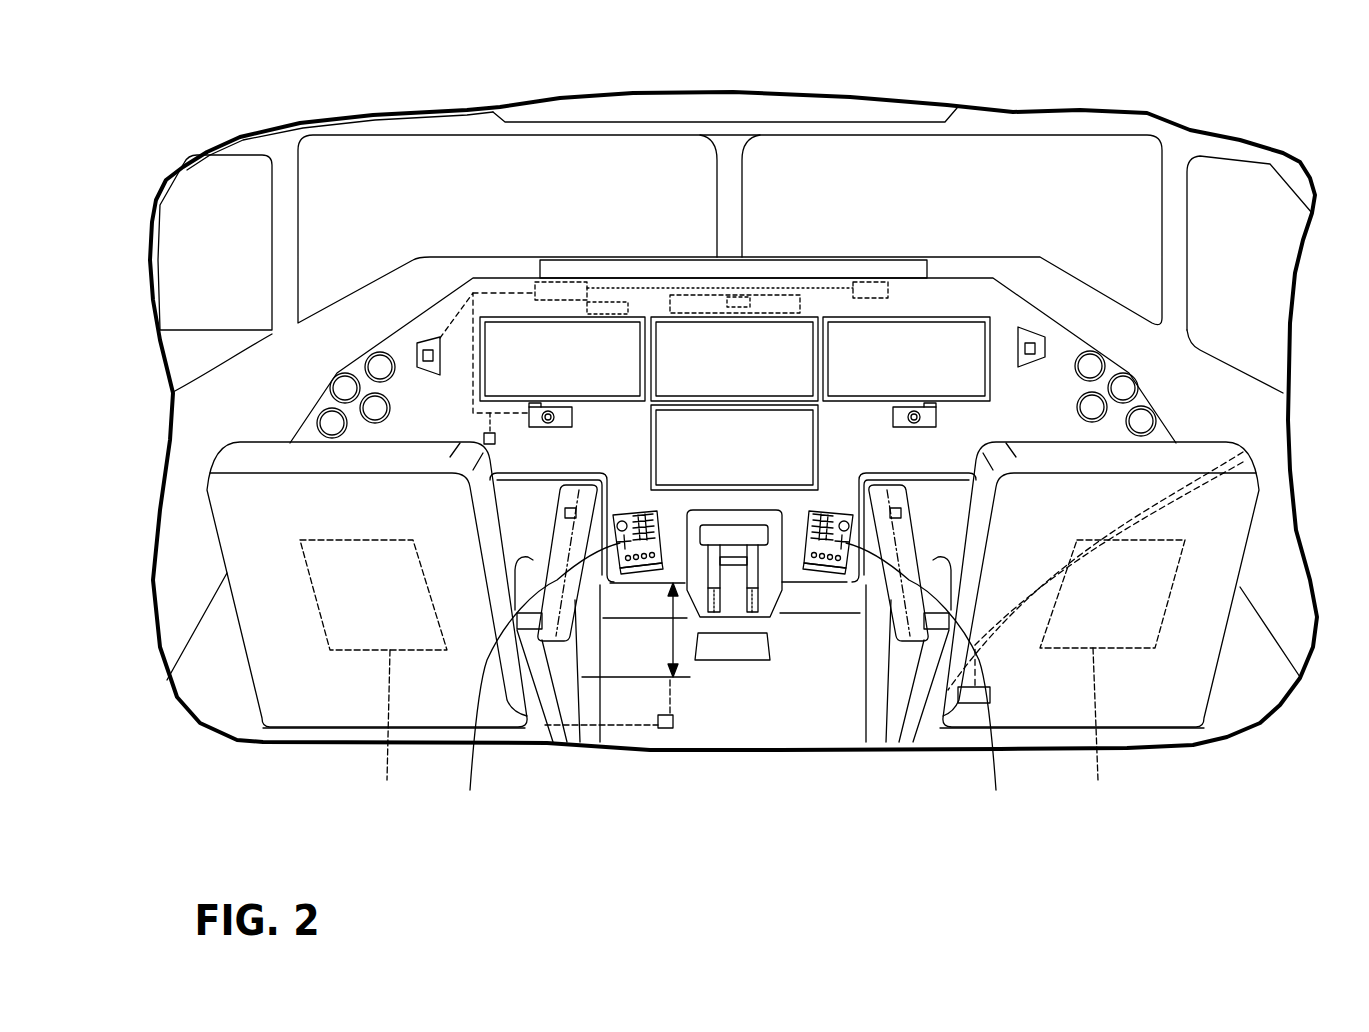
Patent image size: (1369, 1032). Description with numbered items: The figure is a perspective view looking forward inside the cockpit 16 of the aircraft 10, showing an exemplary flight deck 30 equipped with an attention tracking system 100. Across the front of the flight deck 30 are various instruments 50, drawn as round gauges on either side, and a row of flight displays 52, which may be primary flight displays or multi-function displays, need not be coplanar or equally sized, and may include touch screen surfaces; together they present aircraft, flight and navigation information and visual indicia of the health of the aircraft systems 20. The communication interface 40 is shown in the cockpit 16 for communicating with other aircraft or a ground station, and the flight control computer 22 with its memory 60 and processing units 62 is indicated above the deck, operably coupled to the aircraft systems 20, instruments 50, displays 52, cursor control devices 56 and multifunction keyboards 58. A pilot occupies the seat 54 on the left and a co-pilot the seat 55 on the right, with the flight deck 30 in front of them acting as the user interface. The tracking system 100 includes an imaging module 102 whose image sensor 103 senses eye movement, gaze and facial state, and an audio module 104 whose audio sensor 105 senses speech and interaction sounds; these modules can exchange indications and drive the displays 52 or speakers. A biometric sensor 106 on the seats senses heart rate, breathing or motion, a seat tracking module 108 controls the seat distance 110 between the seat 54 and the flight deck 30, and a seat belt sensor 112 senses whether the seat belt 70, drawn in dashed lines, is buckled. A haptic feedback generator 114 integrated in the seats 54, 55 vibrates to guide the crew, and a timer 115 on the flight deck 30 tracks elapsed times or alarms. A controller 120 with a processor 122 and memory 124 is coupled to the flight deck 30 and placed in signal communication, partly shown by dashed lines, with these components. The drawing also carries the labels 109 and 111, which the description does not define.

The aircraft 10 is at (268, 55).
The cockpit 16 is at (433, 112).
The aircraft systems 20 is at (576, 292).
The flight control computer 22 is at (800, 297).
The flight deck 30 is at (331, 364).
The communication interface 40 is at (733, 297).
The instruments 50 is at (330, 423).
The flight displays 52 is at (608, 312).
The seat 54 is at (313, 690).
The seat 55 is at (1138, 680).
The cursor control devices 56 is at (613, 520).
The multifunction keyboards 58 is at (645, 574).
The memory 60 is at (681, 402).
The processing units 62 is at (767, 295).
The seat belt 70 is at (1243, 455).
The tracking system 100 is at (1197, 118).
The imaging module 102 is at (574, 417).
The image sensor 103 is at (552, 422).
The audio module 104 is at (412, 348).
The audio sensor 105 is at (428, 364).
The biometric sensor 106 is at (565, 513).
The seat tracking module 108 is at (665, 729).
The pedal console 109 is at (676, 580).
The seat distance 110 is at (673, 640).
The reference line 111 is at (652, 677).
The seat belt sensor 112 is at (975, 704).
The haptic feedback generator 114 is at (387, 780).
The timer 115 is at (495, 443).
The controller 120 is at (540, 275).
The processor 122 is at (540, 280).
The memory 124 is at (555, 258).